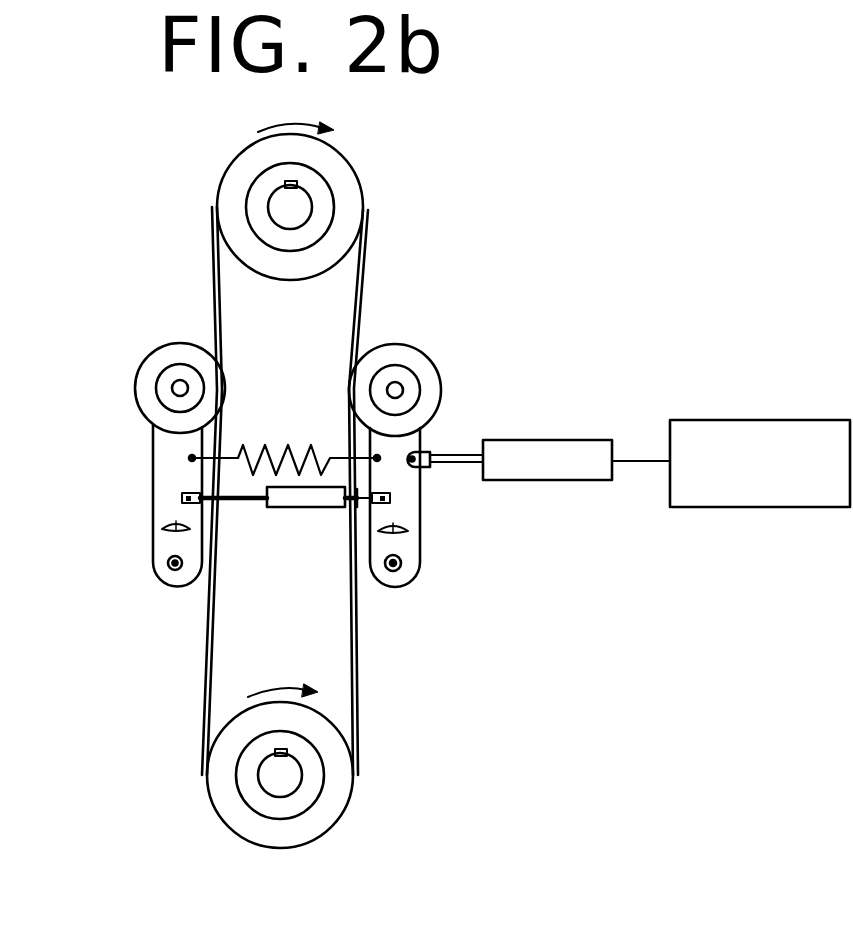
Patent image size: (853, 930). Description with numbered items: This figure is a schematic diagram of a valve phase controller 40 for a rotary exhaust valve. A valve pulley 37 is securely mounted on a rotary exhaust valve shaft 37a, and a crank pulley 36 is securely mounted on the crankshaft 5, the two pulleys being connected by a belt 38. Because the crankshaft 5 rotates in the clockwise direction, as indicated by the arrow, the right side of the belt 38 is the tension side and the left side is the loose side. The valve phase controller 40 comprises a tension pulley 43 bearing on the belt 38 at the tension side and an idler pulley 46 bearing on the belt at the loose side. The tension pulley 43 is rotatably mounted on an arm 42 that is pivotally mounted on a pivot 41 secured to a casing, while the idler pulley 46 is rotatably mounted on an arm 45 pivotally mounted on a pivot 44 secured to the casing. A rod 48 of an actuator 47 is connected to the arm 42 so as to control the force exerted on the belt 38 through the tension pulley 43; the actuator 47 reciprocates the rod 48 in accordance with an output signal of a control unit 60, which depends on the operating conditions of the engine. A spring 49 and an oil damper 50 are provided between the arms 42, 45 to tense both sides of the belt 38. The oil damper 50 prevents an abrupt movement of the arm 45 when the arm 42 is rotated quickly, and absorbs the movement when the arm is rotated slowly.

The crankshaft 5 is at (270, 781).
The crank pulley 36 is at (340, 797).
The valve pulley 37 is at (355, 152).
The rotary exhaust valve shaft 37a is at (303, 207).
The belt 38 is at (357, 705).
The valve phase controller 40 is at (394, 318).
The pivot 41 is at (401, 563).
The arm 42 is at (420, 490).
The tension pulley 43 is at (432, 358).
The pivot 44 is at (168, 566).
The arm 45 is at (153, 490).
The idler pulley 46 is at (135, 390).
The actuator 47 is at (587, 440).
The rod 48 is at (458, 448).
The spring 49 is at (262, 450).
The oil damper 50 is at (300, 510).
The control unit 60 is at (738, 420).